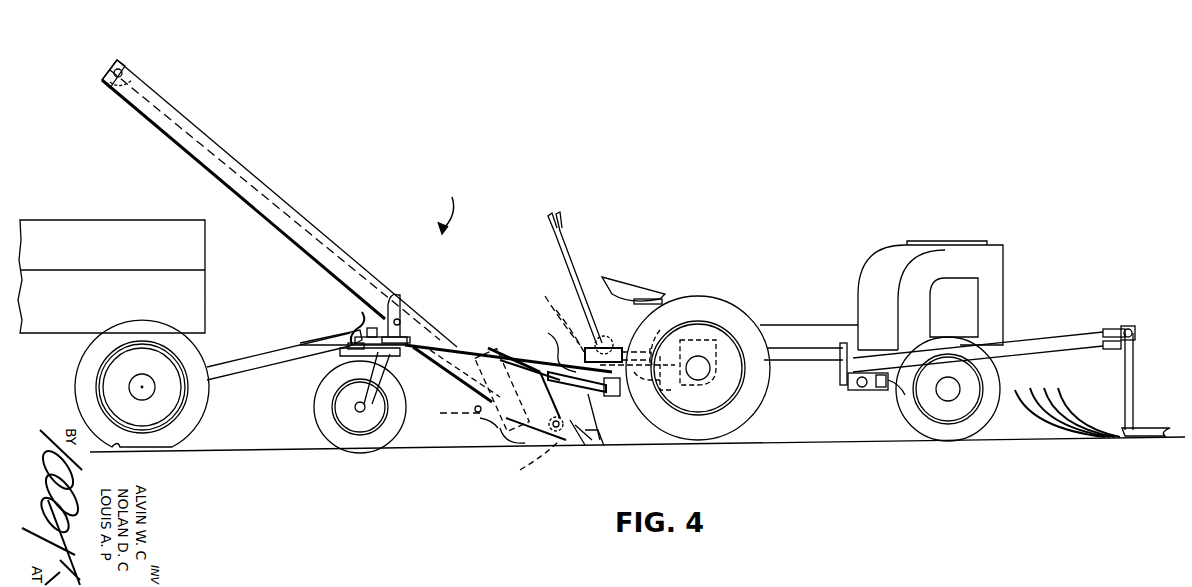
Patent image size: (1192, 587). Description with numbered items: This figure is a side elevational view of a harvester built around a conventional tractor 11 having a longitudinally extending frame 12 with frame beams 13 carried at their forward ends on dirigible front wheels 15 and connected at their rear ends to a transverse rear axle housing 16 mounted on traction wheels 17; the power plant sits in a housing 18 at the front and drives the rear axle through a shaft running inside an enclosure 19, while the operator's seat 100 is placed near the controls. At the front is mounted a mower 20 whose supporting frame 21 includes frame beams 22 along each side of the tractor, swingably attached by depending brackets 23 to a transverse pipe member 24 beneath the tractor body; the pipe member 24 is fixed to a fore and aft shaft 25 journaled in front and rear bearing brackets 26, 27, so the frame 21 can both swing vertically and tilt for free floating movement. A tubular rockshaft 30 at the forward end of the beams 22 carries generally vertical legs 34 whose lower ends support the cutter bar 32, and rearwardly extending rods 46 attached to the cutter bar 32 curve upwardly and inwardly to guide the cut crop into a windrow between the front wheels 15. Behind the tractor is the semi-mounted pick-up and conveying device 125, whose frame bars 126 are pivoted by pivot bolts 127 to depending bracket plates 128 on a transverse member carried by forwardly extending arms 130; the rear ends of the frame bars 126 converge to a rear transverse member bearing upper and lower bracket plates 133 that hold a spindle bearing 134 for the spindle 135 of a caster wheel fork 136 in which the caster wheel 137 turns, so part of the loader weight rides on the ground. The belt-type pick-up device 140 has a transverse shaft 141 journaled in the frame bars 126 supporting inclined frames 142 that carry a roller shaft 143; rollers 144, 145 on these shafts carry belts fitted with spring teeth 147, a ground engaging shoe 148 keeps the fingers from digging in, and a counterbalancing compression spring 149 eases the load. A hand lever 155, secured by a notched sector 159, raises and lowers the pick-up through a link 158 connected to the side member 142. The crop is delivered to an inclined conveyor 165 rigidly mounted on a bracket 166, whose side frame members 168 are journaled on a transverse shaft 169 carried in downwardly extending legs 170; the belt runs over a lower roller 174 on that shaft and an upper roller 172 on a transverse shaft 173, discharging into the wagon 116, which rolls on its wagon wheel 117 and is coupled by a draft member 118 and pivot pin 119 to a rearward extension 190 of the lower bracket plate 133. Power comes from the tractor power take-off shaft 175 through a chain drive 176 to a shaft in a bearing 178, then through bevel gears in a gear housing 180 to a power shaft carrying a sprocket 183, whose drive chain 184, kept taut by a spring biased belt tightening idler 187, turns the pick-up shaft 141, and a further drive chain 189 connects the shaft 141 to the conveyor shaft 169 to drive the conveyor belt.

The tractor 11 is at (904, 240).
The frame 12 is at (806, 347).
The frame beams 13 is at (788, 361).
The front wheels 15 is at (922, 432).
The rear axle housing 16 is at (713, 326).
The traction wheels 17 is at (697, 440).
The housing 18 is at (960, 273).
The enclosure 19 is at (782, 324).
The mower 20 is at (1138, 320).
The supporting frame 21 is at (1084, 326).
The frame beams 22 is at (1041, 340).
The depending brackets 23 is at (852, 390).
The pipe member 24 is at (864, 390).
The shaft 25 is at (879, 388).
The front bearing bracket 26 is at (900, 395).
The rear bearing bracket 27 is at (838, 385).
The rockshaft 30 is at (1135, 334).
The cutter bar 32 is at (1142, 438).
The legs 34 is at (1134, 378).
The rods 46 is at (1062, 416).
The operator's seat 100 is at (622, 290).
The wagon 116 is at (92, 228).
The wagon wheel 117 is at (197, 408).
The draft member 118 is at (258, 362).
The pivot pin 119 is at (353, 336).
The pick-up and conveying device 125 is at (456, 206).
The frame bars 126 is at (460, 350).
The pivot bolts 127 is at (612, 396).
The bracket plates 128 is at (655, 382).
The arms 130 is at (640, 366).
The bracket plates 133 is at (400, 344).
The spindle bearing 134 is at (357, 328).
The spindle 135 is at (392, 300).
The caster wheel fork 136 is at (368, 378).
The caster wheel 137 is at (330, 424).
The pick-up device 140 is at (592, 448).
The transverse shaft 141 is at (520, 360).
The frames 142 is at (570, 392).
The roller shaft 143 is at (592, 428).
The roller 144 is at (508, 345).
The roller 145 is at (540, 466).
The spring teeth 147 is at (574, 447).
The ground engaging shoe 148 is at (525, 440).
The counterbalancing compression spring 149 is at (500, 430).
The hand lever 155 is at (564, 256).
The link 158 is at (559, 407).
The notched sector 159 is at (604, 336).
The conveyor 165 is at (252, 153).
The bracket 166 is at (402, 318).
The side frame members 168 is at (278, 196).
The transverse shaft 169 is at (474, 408).
The legs 170 is at (480, 420).
The roller 172 is at (131, 80).
The transverse shaft 173 is at (121, 62).
The roller 174 is at (445, 410).
The power take-off shaft 175 is at (700, 385).
The chain drive 176 is at (680, 398).
The bearing 178 is at (665, 332).
The gear housing 180 is at (562, 309).
The sprocket 183 is at (566, 322).
The drive chain 184 is at (534, 360).
The belt tightening idler 187 is at (548, 334).
The drive chain 189 is at (462, 388).
The rearward extension 190 is at (345, 356).